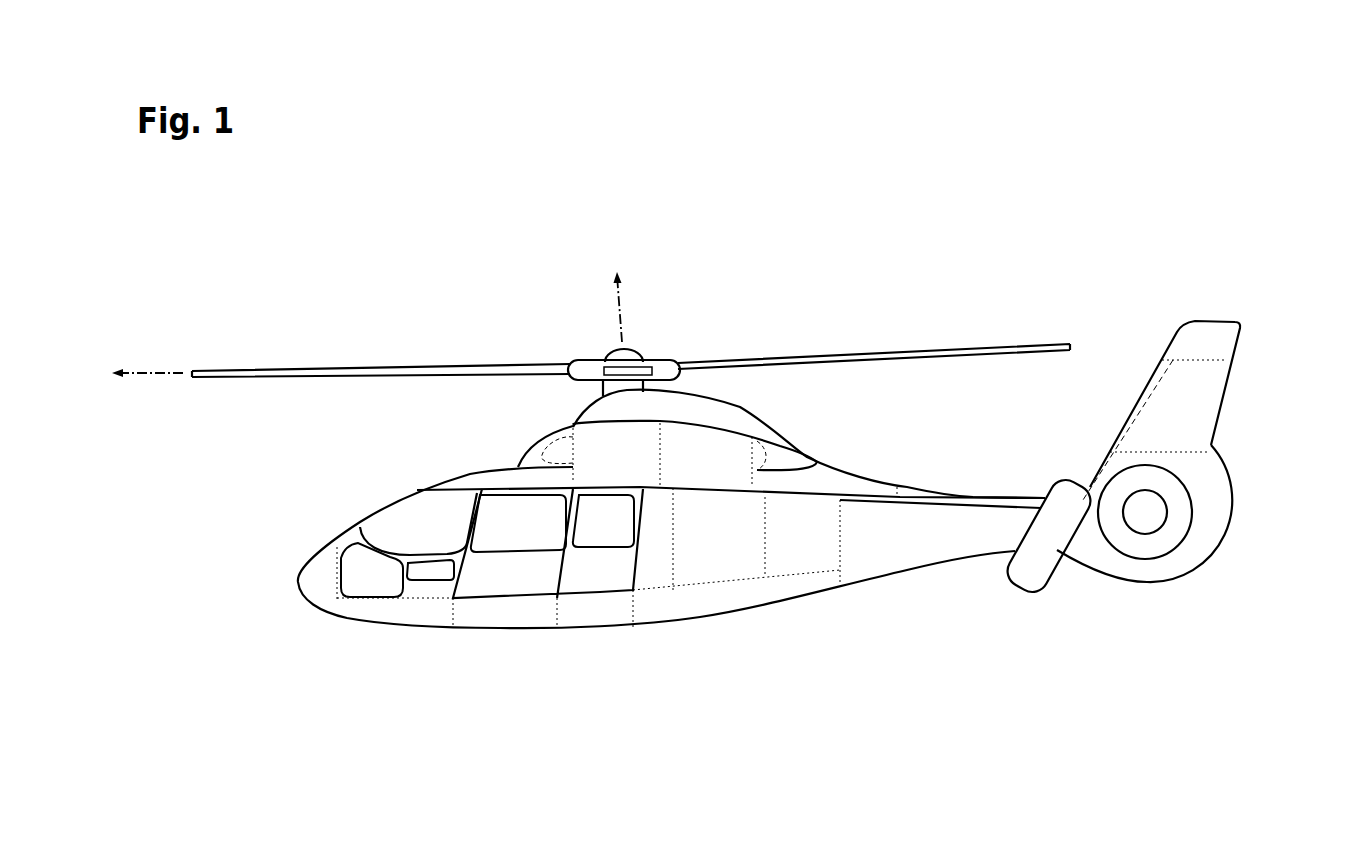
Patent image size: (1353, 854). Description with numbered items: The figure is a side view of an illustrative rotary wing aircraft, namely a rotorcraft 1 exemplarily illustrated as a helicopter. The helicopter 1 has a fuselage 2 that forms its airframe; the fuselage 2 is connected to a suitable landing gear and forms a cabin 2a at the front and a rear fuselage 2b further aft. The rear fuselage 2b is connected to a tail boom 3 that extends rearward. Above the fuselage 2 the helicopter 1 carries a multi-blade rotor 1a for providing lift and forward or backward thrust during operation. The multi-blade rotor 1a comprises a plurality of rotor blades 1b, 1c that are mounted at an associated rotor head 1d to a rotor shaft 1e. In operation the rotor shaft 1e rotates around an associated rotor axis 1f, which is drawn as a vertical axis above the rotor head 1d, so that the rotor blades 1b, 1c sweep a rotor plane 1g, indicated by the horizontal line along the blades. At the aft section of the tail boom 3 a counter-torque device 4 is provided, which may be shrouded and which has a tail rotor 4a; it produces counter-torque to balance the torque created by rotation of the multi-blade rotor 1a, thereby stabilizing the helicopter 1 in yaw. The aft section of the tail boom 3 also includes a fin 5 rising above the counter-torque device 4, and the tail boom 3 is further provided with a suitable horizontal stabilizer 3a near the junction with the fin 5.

The rotorcraft 1 is at (464, 266).
The multi-blade rotor 1a is at (439, 356).
The rotor blade 1b is at (288, 371).
The rotor blade 1c is at (1040, 343).
The rotor head 1d is at (656, 340).
The rotor shaft 1e is at (598, 382).
The rotor axis 1f is at (612, 300).
The rotor plane 1g is at (167, 373).
The fuselage 2 is at (700, 607).
The cabin 2a is at (407, 522).
The rear fuselage 2b is at (800, 601).
The tail boom 3 is at (977, 517).
The horizontal stabilizer 3a is at (1033, 572).
The counter-torque device 4 is at (1207, 495).
The tail rotor 4a is at (1161, 543).
The fin 5 is at (1199, 354).